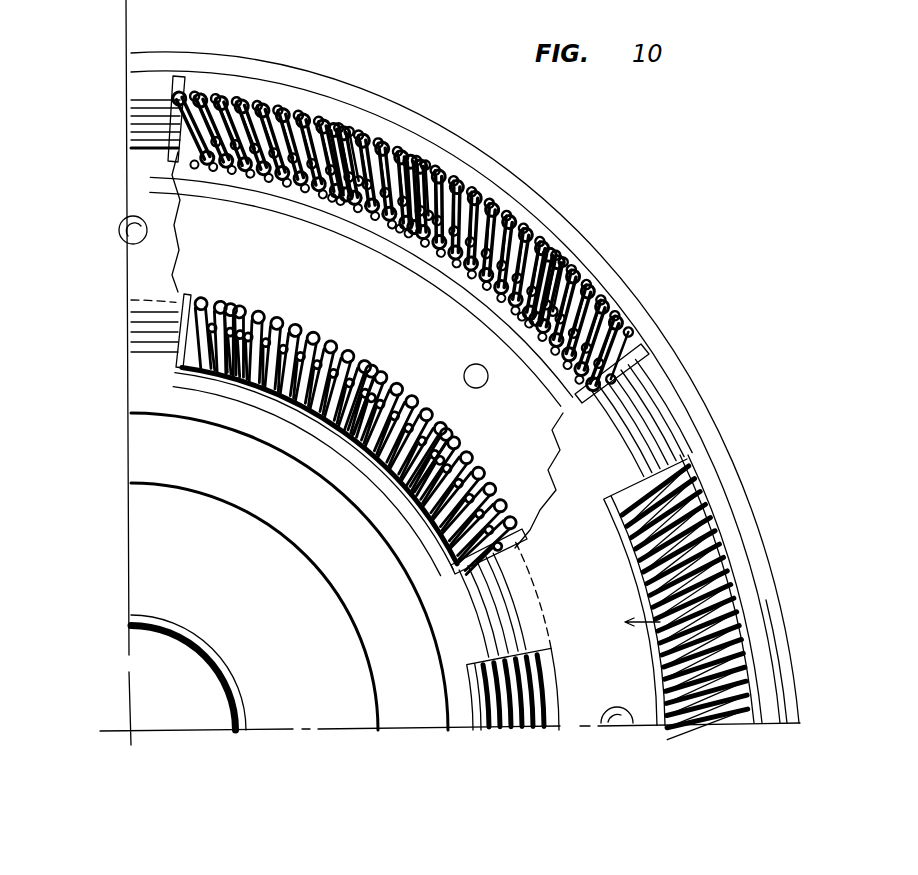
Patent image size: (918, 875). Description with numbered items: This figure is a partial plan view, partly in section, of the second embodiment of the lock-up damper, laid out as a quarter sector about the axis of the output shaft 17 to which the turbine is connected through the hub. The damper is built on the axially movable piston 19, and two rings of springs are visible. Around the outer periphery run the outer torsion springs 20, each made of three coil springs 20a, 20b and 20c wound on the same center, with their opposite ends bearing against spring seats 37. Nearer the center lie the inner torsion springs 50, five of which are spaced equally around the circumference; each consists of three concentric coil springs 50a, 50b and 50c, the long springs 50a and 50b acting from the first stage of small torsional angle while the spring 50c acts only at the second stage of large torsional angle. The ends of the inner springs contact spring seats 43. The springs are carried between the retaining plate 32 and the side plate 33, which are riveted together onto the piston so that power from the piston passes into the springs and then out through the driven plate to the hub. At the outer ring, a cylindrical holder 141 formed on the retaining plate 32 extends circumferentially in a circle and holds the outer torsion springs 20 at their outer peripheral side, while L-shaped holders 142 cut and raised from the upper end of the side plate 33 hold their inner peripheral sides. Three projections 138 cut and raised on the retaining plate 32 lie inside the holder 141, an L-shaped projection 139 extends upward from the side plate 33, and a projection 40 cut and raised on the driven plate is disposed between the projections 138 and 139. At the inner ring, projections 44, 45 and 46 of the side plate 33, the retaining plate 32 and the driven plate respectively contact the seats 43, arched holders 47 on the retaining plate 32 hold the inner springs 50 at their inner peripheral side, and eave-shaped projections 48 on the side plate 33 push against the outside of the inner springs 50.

The output shaft 17 is at (135, 733).
The piston 19 is at (331, 78).
The outer torsion spring 20 is at (460, 180).
The coil spring 20a is at (410, 163).
The coil spring 20b is at (350, 133).
The coil spring 20c is at (520, 247).
The retaining plate 32 is at (728, 494).
The side plate 33 is at (748, 592).
The spring seat 37 is at (188, 78).
The projection 40 is at (123, 125).
The spring seat 43 is at (186, 300).
The projection 44 is at (137, 307).
The projection 45 is at (137, 352).
The lamination 46 is at (130, 333).
The arched holder 47 is at (347, 457).
The projection 48 is at (553, 673).
The inner torsion spring 50 is at (253, 437).
The coil spring 50a is at (253, 318).
The coil spring 50b is at (327, 342).
The coil spring 50c is at (445, 398).
The projection 138 is at (133, 88).
The projection 139 is at (127, 158).
The cylindrical holder 141 is at (760, 650).
The holder 142 is at (447, 275).